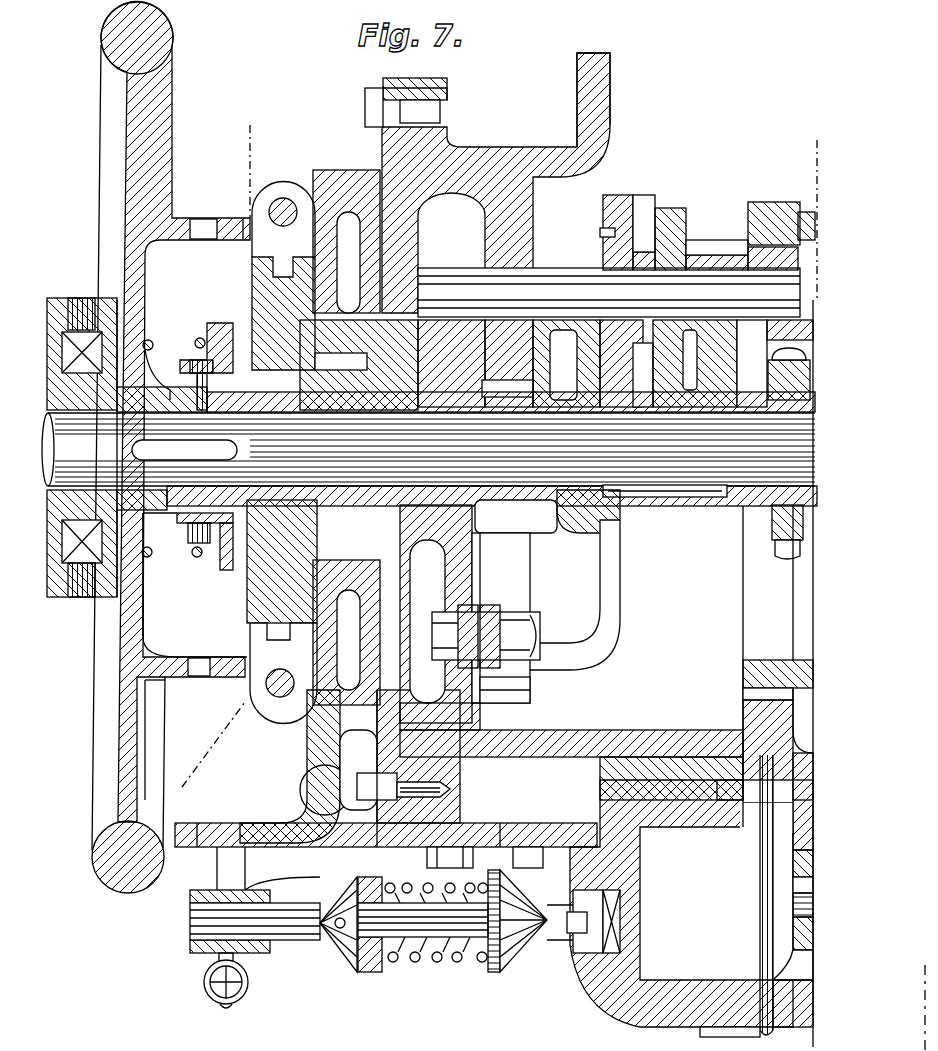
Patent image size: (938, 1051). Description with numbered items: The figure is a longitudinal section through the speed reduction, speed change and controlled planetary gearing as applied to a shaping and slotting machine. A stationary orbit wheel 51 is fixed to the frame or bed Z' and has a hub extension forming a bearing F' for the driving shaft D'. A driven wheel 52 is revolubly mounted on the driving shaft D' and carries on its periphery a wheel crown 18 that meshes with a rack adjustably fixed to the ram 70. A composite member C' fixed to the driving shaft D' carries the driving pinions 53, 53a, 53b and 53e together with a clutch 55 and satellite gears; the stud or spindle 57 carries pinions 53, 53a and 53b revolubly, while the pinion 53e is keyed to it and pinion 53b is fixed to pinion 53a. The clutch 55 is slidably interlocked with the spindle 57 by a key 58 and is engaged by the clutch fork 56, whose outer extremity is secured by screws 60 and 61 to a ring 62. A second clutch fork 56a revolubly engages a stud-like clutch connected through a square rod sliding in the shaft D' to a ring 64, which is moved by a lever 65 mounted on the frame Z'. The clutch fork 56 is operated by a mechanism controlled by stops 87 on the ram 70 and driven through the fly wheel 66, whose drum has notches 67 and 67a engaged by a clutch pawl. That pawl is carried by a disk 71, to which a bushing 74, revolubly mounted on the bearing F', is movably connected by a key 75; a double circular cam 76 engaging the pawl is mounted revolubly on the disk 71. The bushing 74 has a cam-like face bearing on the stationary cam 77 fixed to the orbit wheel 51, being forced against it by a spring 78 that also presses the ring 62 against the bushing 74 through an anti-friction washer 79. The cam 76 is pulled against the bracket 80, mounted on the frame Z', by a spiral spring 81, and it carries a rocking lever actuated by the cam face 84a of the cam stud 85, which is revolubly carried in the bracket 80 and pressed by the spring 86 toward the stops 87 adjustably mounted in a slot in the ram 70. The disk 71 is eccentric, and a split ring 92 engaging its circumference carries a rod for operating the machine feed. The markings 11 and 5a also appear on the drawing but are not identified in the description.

The fly wheel 66 is at (140, 112).
The notch 67 is at (248, 222).
The section line 11 is at (255, 160).
The ring 64 is at (50, 600).
The lever 65 is at (98, 602).
The stationary cam 77 is at (316, 268).
The disk 71 is at (250, 282).
The key 75 is at (250, 322).
The ring 62 is at (208, 323).
The screw 61 is at (182, 352).
The stationary orbit wheel 51 is at (405, 178).
The key 58 is at (513, 280).
The frame or bed Z' is at (571, 405).
The stud or spindle 57 is at (663, 278).
The driving pinion 53 is at (537, 200).
The driving pinion 53a is at (603, 190).
The clutch 55 is at (638, 205).
The driving pinion 53b is at (677, 208).
The driving pinion 53e is at (770, 233).
The driven wheel 52 is at (803, 213).
The bolt 5a is at (810, 360).
The driving shaft D' is at (428, 449).
The clutch fork 56 is at (542, 500).
The clutch fork 56a is at (770, 528).
The bushing 74 is at (250, 577).
The screw 60 is at (150, 557).
The spring 78 is at (190, 547).
The anti-friction washer 79 is at (213, 558).
The bearing F' is at (188, 575).
The double circular cam 76 is at (313, 728).
The notch 67a is at (240, 680).
The split ring 92 is at (258, 702).
The composite member C' is at (532, 610).
The wheel crown 18 is at (763, 695).
The ram 70 is at (635, 783).
The bracket 80 is at (192, 952).
The spiral spring 81 is at (210, 1000).
The cam face 84a is at (342, 943).
The cam stud 85 is at (463, 920).
The spring 86 is at (480, 957).
The stops 87 is at (547, 940).